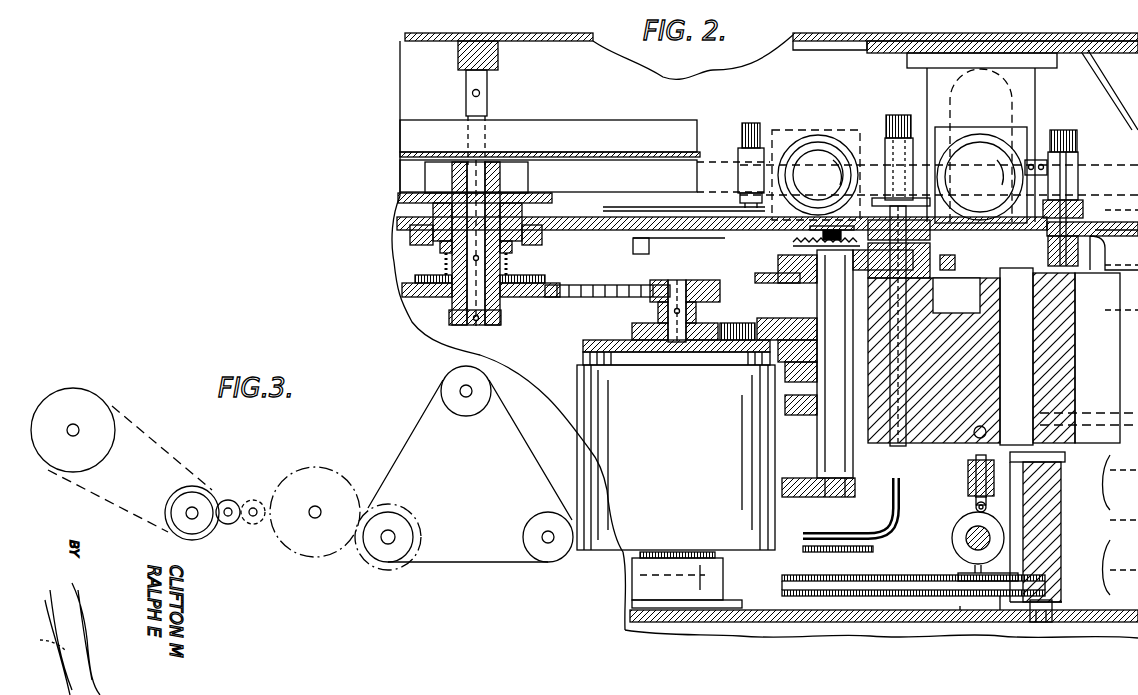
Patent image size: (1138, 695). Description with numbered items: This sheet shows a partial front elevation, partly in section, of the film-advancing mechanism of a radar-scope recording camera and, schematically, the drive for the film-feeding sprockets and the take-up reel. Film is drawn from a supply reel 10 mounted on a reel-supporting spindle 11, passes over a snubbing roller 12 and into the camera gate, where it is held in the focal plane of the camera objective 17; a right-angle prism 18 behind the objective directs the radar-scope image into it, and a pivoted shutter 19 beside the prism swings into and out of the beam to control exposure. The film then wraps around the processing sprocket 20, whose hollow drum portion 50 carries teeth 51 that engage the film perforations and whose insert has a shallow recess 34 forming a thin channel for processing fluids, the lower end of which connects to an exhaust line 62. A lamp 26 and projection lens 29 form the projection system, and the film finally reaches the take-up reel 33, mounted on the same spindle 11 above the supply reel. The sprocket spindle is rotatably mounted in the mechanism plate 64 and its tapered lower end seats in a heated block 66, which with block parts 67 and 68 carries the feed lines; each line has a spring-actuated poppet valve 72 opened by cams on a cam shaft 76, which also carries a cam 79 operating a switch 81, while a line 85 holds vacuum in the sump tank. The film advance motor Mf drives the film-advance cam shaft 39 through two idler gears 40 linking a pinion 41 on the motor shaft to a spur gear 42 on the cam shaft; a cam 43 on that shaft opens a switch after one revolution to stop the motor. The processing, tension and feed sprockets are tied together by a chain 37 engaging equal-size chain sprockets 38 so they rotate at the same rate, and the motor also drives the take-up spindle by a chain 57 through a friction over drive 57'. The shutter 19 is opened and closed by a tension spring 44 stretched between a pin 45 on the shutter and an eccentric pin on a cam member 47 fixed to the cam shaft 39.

In FIG. 2, the supply reel 10 is at (420, 208).
In FIG. 2, the reel-supporting spindle 11 is at (472, 322).
In FIG. 3, the reel-supporting spindle 11 is at (68, 436).
In FIG. 2, the snubbing roller 12 is at (738, 160).
In FIG. 2, the camera objective 17 is at (800, 148).
In FIG. 2, the right-angle prism 18 is at (816, 157).
In FIG. 2, the pivoted shutter 19 is at (688, 236).
In FIG. 2, the processing sprocket 20 is at (885, 160).
In FIG. 2, the lamp 26 is at (1015, 85).
In FIG. 2, the projection lens 29 is at (1007, 160).
In FIG. 2, the take-up reel 33 is at (598, 120).
In FIG. 2, the recess 34 is at (894, 308).
In FIG. 2, the chain 37 is at (940, 258).
In FIG. 3, the chain 37 is at (408, 454).
In FIG. 2, the chain sprockets 38 is at (1082, 258).
In FIG. 3, the chain sprockets 38 is at (413, 537).
In FIG. 2, the film-advance cam shaft 39 is at (817, 455).
In FIG. 3, the film-advance cam shaft 39 is at (320, 507).
In FIG. 2, the idler gears 40 is at (738, 312).
In FIG. 3, the idler gears 40 is at (233, 500).
In FIG. 2, the pinion 41 is at (702, 280).
In FIG. 3, the pinion 41 is at (200, 536).
In FIG. 2, the spur gear 42 is at (772, 302).
In FIG. 3, the spur gear 42 is at (298, 556).
In FIG. 2, the cam 43 is at (793, 415).
In FIG. 2, the tension spring 44 is at (790, 239).
In FIG. 2, the pin 45 is at (810, 250).
In FIG. 2, the cam member 47 is at (752, 272).
In FIG. 2, the hollow drum portion 50 is at (888, 120).
In FIG. 2, the teeth 51 is at (913, 125).
In FIG. 2, the chain 57 is at (607, 275).
In FIG. 3, the chain 57 is at (130, 469).
In FIG. 2, the friction over drive 57' is at (484, 275).
In FIG. 2, the exhaust line 62 is at (855, 545).
In FIG. 2, the mechanism plate 64 is at (583, 230).
In FIG. 2, the block 66 is at (940, 292).
In FIG. 2, the block part 67 is at (1065, 350).
In FIG. 2, the block part 68 is at (1023, 478).
In FIG. 2, the poppet valve 72 is at (968, 475).
In FIG. 2, the cam shaft 76 is at (968, 545).
In FIG. 2, the cam 79 is at (952, 532).
In FIG. 2, the switch 81 is at (960, 572).
In FIG. 2, the line 85 is at (782, 585).
In FIG. 2, the film advance motor Mf is at (676, 445).